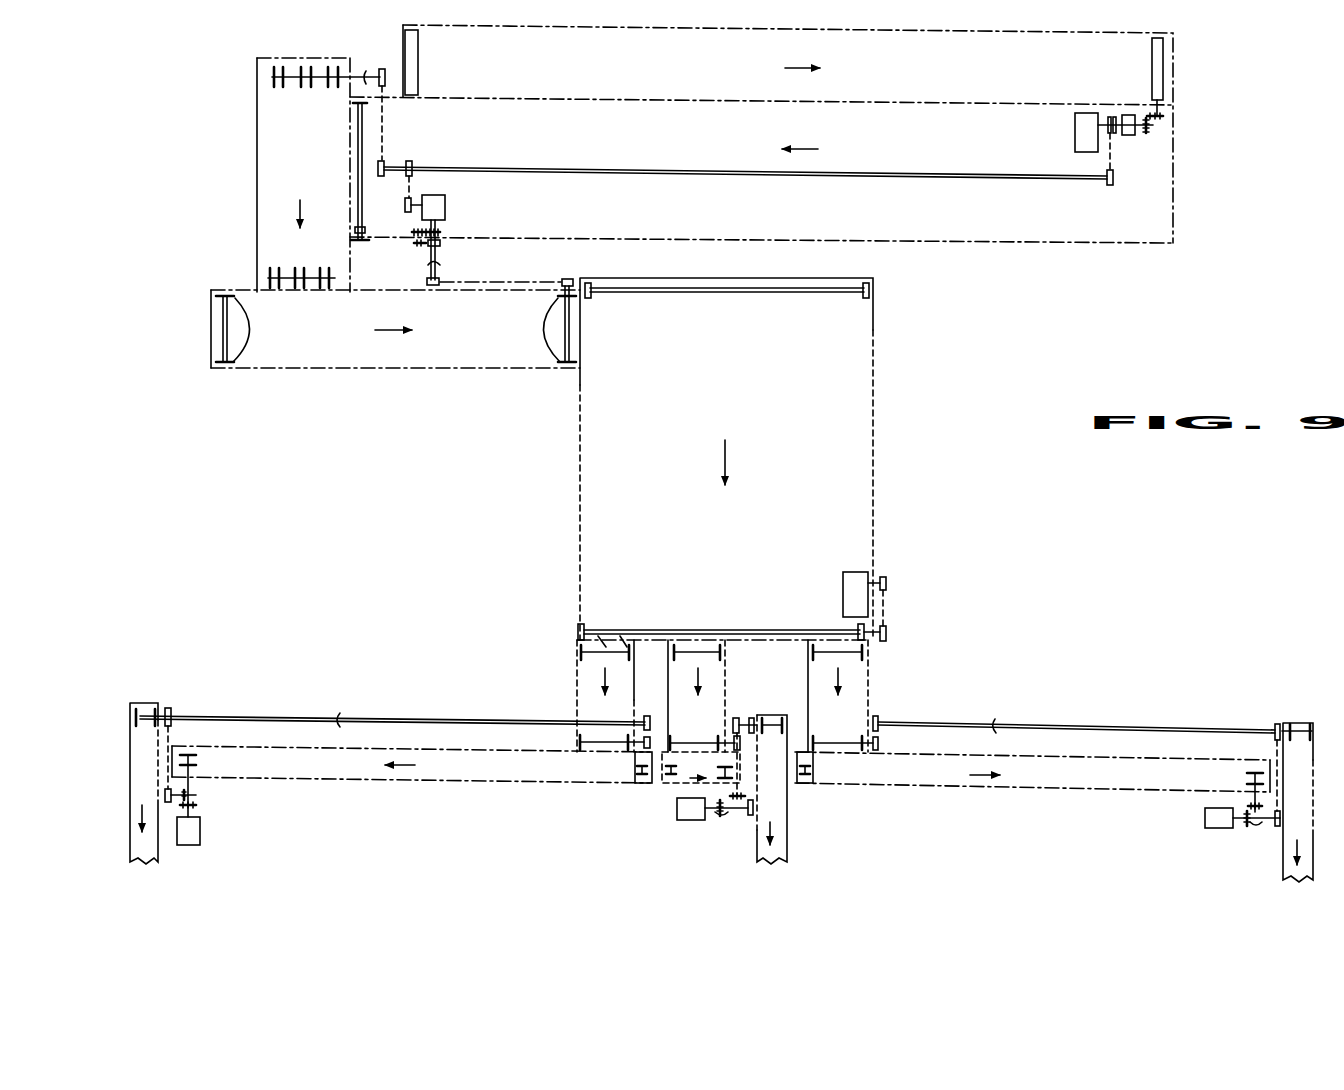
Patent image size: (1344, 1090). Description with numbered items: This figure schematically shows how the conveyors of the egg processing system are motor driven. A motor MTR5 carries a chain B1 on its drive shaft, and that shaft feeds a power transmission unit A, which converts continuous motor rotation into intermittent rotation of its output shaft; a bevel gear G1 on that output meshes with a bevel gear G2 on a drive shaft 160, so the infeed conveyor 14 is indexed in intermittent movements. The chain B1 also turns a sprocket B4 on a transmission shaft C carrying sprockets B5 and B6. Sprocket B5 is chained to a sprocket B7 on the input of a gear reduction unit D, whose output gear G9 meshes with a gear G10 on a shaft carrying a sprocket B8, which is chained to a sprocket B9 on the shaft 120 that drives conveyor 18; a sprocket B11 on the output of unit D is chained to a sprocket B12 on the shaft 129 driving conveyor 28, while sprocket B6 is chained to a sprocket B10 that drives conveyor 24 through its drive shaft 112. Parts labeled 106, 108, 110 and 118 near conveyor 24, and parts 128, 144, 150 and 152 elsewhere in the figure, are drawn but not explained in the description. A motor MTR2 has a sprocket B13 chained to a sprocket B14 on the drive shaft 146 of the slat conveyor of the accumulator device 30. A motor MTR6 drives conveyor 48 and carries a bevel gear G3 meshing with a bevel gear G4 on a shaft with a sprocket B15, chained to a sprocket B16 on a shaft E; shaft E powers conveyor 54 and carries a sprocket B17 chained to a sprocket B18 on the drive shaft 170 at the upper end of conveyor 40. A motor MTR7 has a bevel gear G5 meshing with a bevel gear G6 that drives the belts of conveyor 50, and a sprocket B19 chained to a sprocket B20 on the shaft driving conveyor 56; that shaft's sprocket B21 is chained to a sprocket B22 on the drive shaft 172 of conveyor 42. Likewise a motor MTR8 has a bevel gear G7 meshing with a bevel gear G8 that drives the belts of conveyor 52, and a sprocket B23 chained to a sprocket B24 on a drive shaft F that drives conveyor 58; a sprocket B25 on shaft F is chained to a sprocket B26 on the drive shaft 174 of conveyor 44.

The infeed conveyor 14 is at (890, 30).
The drive shaft 160 is at (1163, 45).
The conveyor 18 is at (1092, 246).
The motor MTR5 is at (1075, 133).
The chain B1 is at (1113, 158).
The power transmission unit A is at (1128, 114).
The bevel gear G1 is at (1150, 130).
The bevel gear G2 is at (1157, 118).
The sprocket B4 is at (1114, 182).
The transmission shaft C is at (868, 174).
The conveyor 24 is at (255, 123).
The roller 106 is at (278, 66).
The roller 110 is at (335, 66).
The roller 108 is at (302, 88).
The drive shaft 112 is at (333, 88).
The sprocket B10 is at (390, 60).
The bearing 118 is at (383, 104).
The shaft 120 is at (358, 140).
The sprocket B9 is at (352, 240).
The sprocket B6 is at (383, 161).
The sprocket B5 is at (413, 165).
The sprocket B7 is at (413, 203).
The gear reduction unit D is at (447, 207).
The gear G9 is at (442, 233).
The gear G10 is at (413, 243).
The sprocket B8 is at (428, 250).
The sprocket B11 is at (433, 287).
The sprocket B12 is at (565, 279).
The conveyor 28 is at (360, 372).
The shaft 129 is at (221, 325).
The roller 128 is at (396, 330).
The accumulator device 30 is at (578, 385).
The drive shaft 146 is at (687, 287).
The bearing 144 is at (592, 283).
The motor MTR2 is at (843, 587).
The sprocket B13 is at (888, 582).
The sprocket B14 is at (890, 634).
The belt 152 is at (604, 640).
The roller 150 is at (578, 652).
The conveyor 40 is at (572, 670).
The conveyor 42 is at (730, 672).
The conveyor 44 is at (872, 672).
The shaft E is at (340, 716).
The conveyor 54 is at (128, 742).
The sprocket B16 is at (170, 708).
The conveyor 48 is at (420, 782).
The sprocket B15 is at (165, 795).
The bevel gear G4 is at (196, 797).
The bevel gear G3 is at (196, 806).
The motor MTR6 is at (200, 838).
The sprocket B17 is at (643, 722).
The drive shaft 170 is at (578, 742).
The sprocket B18 is at (643, 748).
The conveyor 50 is at (668, 785).
The drive shaft 172 is at (712, 752).
The sprocket B22 is at (735, 740).
The sprocket B21 is at (736, 718).
The sprocket B20 is at (752, 718).
The conveyor 56 is at (790, 860).
The motor MTR7 is at (677, 815).
The bevel gear G5 is at (722, 818).
The bevel gear G6 is at (748, 796).
The sprocket B19 is at (754, 808).
The drive shaft F is at (1052, 728).
The sprocket B25 is at (878, 717).
The sprocket B26 is at (880, 744).
The drive shaft 174 is at (830, 752).
The conveyor 52 is at (1065, 793).
The sprocket B24 is at (1276, 724).
The conveyor 58 is at (1282, 845).
The bevel gear G8 is at (1250, 808).
The motor MTR8 is at (1205, 822).
The bevel gear G7 is at (1250, 828).
The sprocket B23 is at (1281, 818).